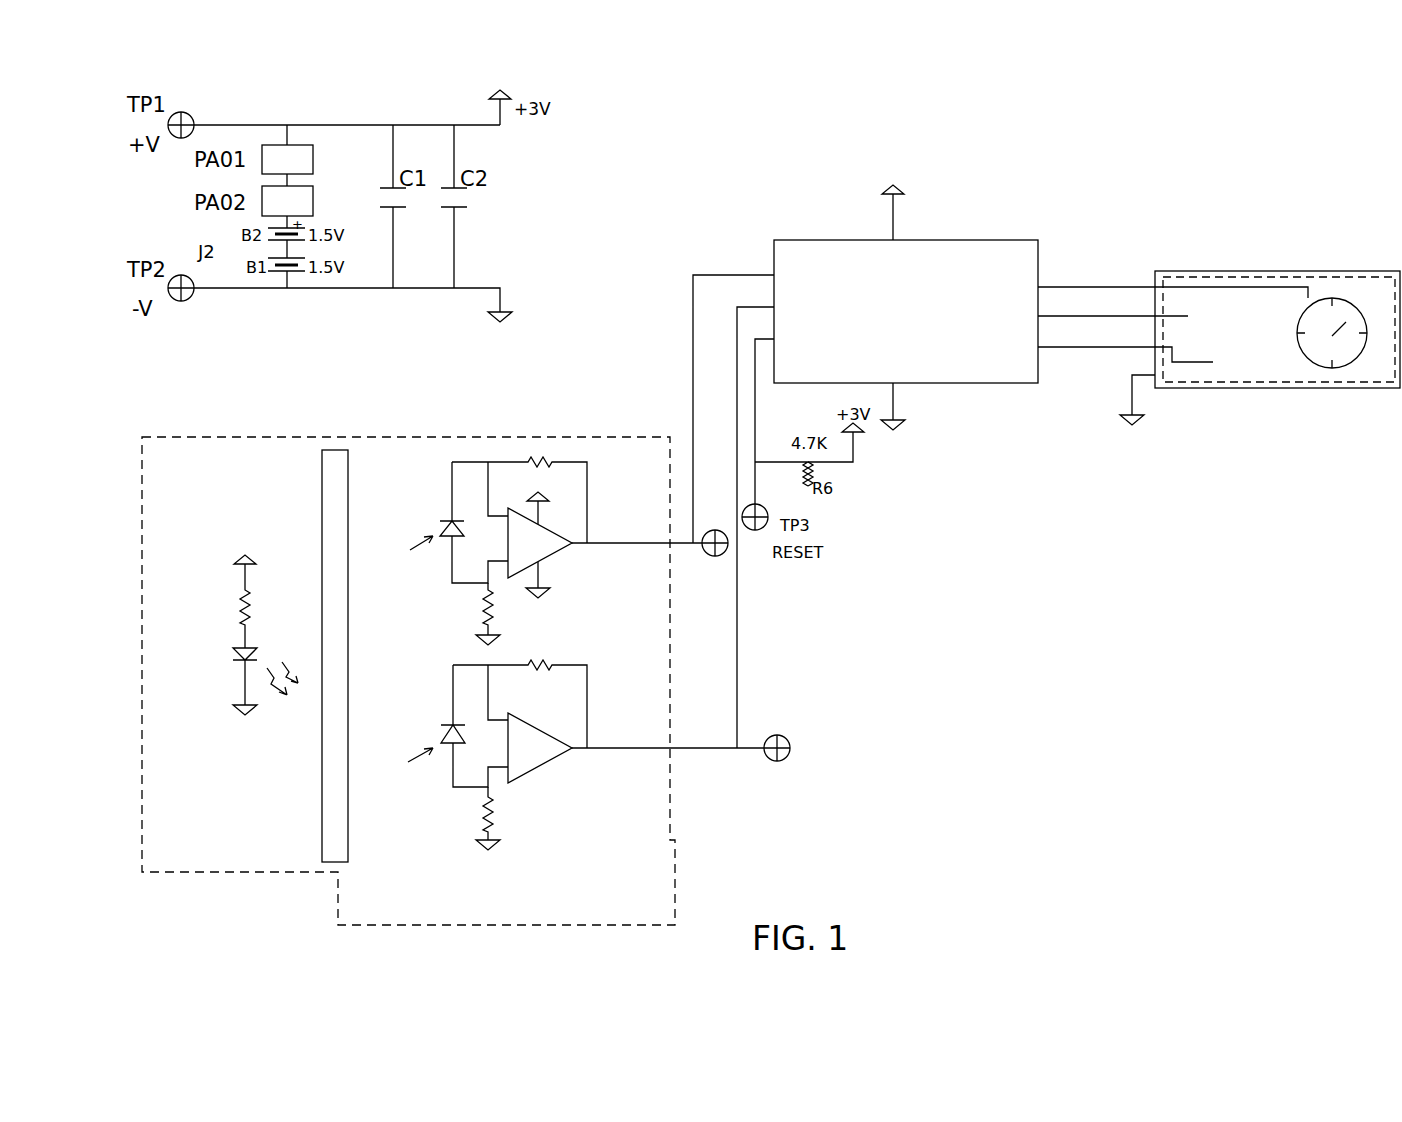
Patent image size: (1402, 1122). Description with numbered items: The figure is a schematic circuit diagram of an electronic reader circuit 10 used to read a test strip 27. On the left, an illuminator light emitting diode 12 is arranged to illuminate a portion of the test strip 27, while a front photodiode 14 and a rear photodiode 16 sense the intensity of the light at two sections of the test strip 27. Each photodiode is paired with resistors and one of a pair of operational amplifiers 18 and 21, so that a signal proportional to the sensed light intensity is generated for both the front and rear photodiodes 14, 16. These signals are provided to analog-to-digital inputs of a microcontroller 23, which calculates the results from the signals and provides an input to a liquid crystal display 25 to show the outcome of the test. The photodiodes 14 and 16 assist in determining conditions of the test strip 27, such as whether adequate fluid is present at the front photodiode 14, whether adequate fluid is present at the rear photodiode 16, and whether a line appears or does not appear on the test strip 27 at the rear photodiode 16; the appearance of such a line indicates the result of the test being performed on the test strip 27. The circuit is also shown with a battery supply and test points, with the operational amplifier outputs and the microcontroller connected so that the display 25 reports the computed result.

The electronic reader circuit 10 is at (1110, 557).
The illuminator light emitting diode 12 is at (243, 648).
The front photodiode 14 is at (452, 521).
The rear photodiode 16 is at (452, 725).
The operational amplifier 18 is at (515, 510).
The operational amplifier 21 is at (537, 728).
The microcontroller 23 is at (950, 240).
The liquid crystal display 25 is at (1230, 271).
The test strip 27 is at (322, 840).